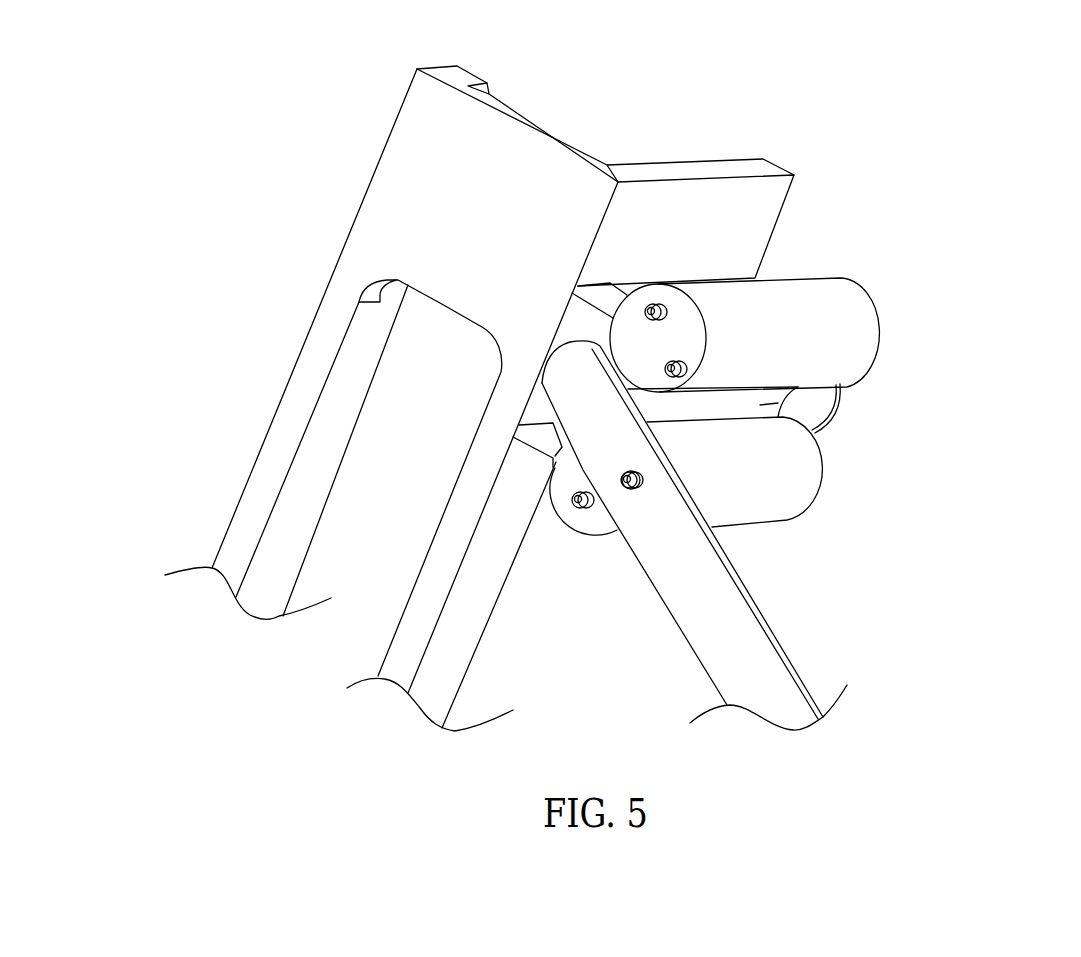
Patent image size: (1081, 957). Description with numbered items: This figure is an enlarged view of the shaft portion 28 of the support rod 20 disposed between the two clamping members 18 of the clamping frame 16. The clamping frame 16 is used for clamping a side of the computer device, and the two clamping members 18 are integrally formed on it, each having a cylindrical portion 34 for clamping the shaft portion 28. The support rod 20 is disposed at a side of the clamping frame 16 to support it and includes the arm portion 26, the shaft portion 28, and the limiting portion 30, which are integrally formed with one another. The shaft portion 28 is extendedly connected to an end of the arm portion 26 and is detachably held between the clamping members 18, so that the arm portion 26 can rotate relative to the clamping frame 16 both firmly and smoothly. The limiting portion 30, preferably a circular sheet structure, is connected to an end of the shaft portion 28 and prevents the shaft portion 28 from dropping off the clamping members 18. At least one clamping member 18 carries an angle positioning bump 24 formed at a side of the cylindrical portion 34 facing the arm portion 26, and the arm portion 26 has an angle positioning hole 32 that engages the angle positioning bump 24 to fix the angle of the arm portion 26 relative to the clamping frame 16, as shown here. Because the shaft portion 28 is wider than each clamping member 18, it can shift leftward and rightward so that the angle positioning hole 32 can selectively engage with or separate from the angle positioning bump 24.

The clamping frame 16 is at (415, 128).
The clamping member 18 is at (858, 275).
The support rod 20 is at (805, 535).
The angle positioning bump 24 is at (628, 495).
The arm portion 26 is at (728, 612).
The shaft portion 28 is at (812, 472).
The limiting portion 30 is at (818, 398).
The angle positioning hole 32 is at (645, 493).
The cylindrical portion 34 is at (848, 312).